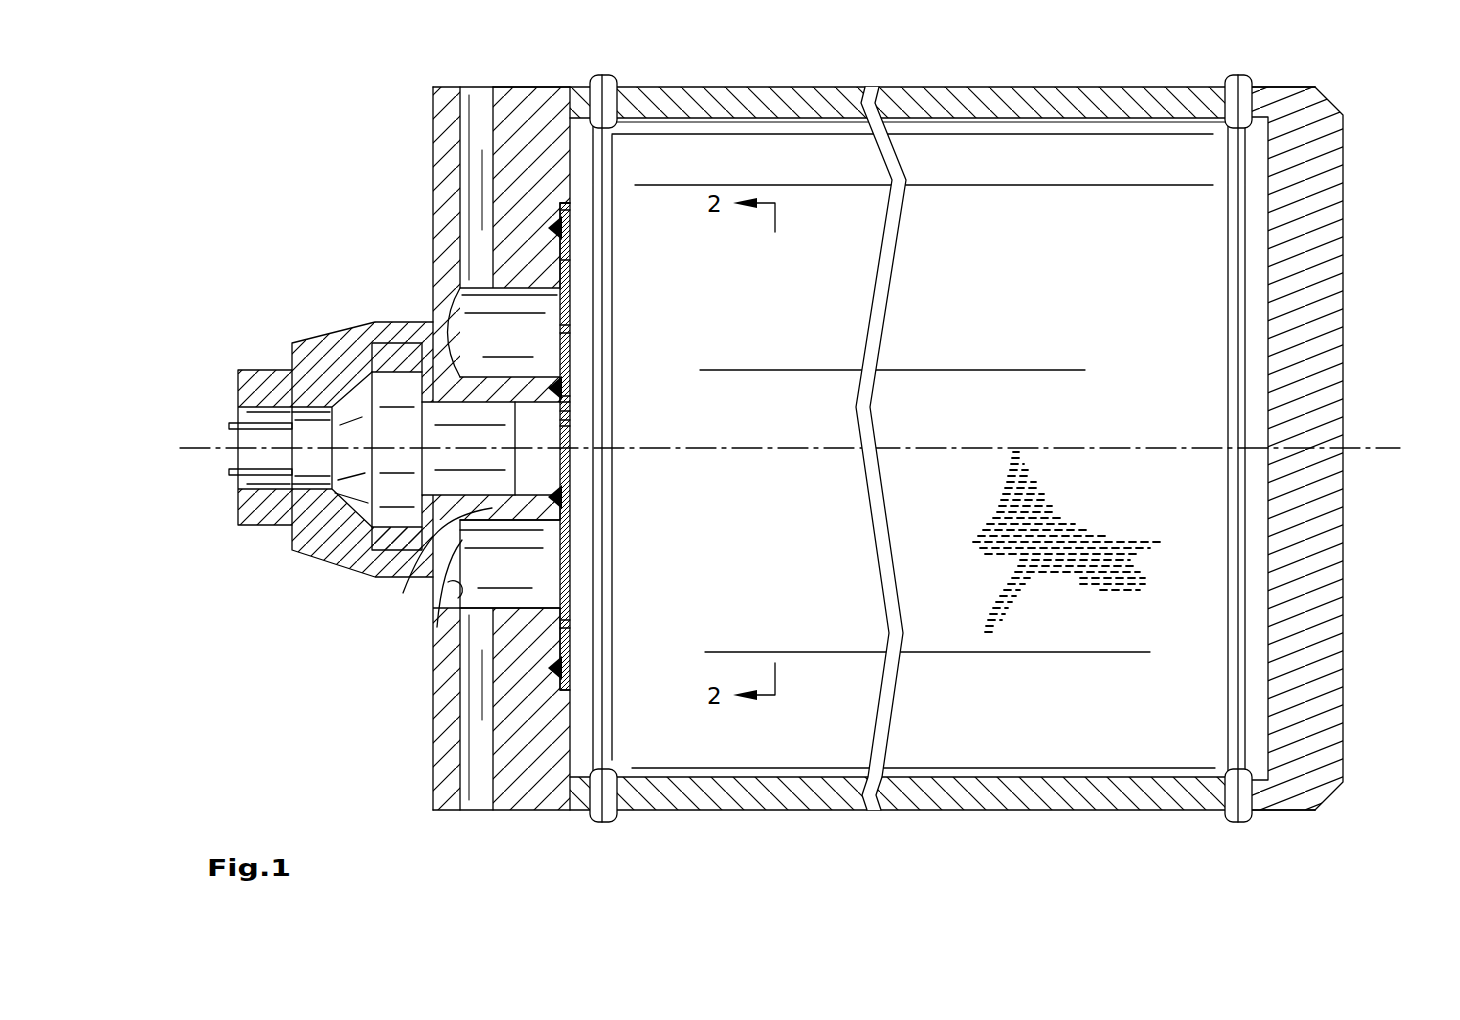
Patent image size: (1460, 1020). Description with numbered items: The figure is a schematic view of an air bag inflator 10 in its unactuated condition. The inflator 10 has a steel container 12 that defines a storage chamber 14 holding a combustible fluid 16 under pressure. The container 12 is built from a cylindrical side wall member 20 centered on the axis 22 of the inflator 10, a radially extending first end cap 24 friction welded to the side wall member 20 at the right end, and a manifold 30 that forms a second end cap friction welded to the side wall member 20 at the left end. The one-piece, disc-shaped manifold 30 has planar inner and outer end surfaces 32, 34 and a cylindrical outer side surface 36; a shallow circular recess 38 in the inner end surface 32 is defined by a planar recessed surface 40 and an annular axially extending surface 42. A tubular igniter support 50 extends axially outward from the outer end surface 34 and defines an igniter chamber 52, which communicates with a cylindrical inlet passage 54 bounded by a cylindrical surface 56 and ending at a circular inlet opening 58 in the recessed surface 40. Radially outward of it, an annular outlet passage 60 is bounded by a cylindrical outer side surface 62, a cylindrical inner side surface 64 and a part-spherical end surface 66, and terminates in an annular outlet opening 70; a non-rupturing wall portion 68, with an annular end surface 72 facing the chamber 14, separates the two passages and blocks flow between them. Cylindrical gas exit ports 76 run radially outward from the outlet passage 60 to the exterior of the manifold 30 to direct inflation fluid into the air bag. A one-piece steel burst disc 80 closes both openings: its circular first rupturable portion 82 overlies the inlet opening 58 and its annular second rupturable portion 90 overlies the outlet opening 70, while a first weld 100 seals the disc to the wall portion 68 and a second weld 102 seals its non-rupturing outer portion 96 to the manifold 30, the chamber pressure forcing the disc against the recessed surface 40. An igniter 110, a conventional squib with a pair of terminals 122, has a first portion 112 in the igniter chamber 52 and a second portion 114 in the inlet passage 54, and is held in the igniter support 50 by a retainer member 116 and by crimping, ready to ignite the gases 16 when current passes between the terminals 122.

The inflator 10 is at (1090, 65).
The container 12 is at (970, 75).
The storage chamber 14 is at (1070, 222).
The fluid 16 is at (1040, 555).
The cylindrical side wall member 20 is at (752, 80).
The axis 22 is at (1355, 447).
The first end cap 24 is at (1355, 298).
The manifold 30 is at (560, 80).
The inner end surface 32 is at (572, 155).
The outer end surface 34 is at (430, 125).
The cylindrical outer side surface 36 is at (518, 87).
The recess 38 is at (570, 268).
The recessed surface 40 is at (570, 255).
The annular axially extending surface 42 is at (565, 210).
The igniter support 50 is at (318, 342).
The igniter chamber 52 is at (348, 343).
The inlet passage 54 is at (530, 420).
The cylindrical surface 56 is at (570, 402).
The inlet opening 58 is at (570, 420).
The outlet passage 60 is at (545, 558).
The cylindrical outer side surface 62 is at (525, 600).
The cylindrical inner side surface 64 is at (540, 520).
The part-spherical end surface 66 is at (450, 598).
The wall portion 68 is at (455, 590).
The outlet opening 70 is at (560, 577).
The annular end surface 72 is at (570, 495).
The gas exit ports 76 is at (479, 107).
The burst disc 80 is at (572, 283).
The first rupturable portion 82 is at (570, 411).
The second rupturable portion 90 is at (575, 328).
The non-rupturing outer portion 96 is at (570, 623).
The first weld 100 is at (570, 383).
The second weld 102 is at (570, 668).
The igniter 110 is at (330, 490).
The first portion 112 is at (310, 468).
The second portion 114 is at (447, 427).
The retainer member 116 is at (255, 387).
The terminals 122 is at (230, 472).